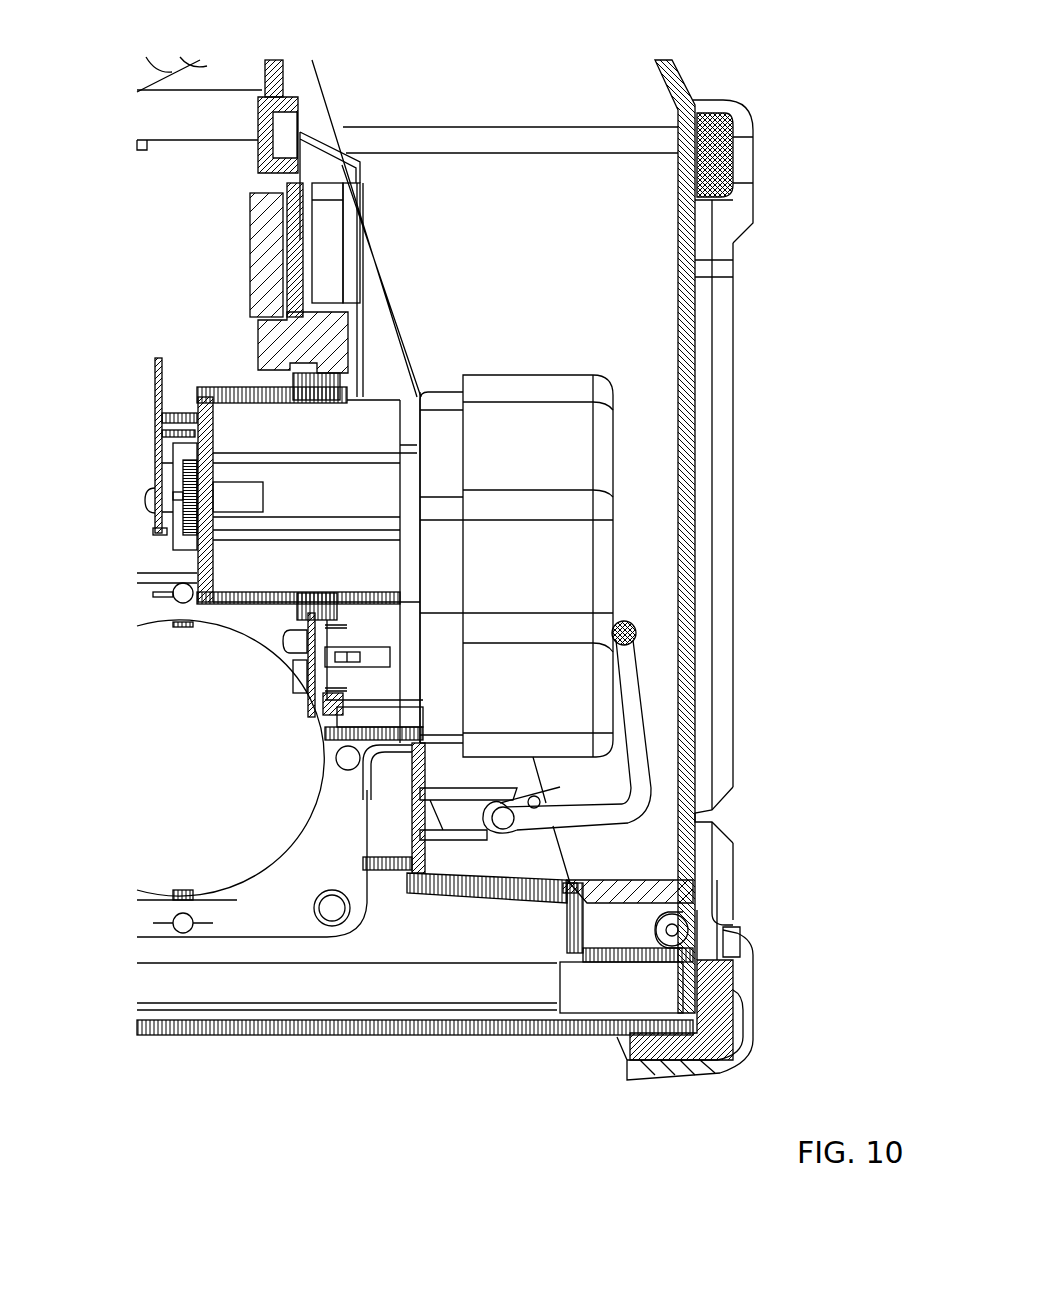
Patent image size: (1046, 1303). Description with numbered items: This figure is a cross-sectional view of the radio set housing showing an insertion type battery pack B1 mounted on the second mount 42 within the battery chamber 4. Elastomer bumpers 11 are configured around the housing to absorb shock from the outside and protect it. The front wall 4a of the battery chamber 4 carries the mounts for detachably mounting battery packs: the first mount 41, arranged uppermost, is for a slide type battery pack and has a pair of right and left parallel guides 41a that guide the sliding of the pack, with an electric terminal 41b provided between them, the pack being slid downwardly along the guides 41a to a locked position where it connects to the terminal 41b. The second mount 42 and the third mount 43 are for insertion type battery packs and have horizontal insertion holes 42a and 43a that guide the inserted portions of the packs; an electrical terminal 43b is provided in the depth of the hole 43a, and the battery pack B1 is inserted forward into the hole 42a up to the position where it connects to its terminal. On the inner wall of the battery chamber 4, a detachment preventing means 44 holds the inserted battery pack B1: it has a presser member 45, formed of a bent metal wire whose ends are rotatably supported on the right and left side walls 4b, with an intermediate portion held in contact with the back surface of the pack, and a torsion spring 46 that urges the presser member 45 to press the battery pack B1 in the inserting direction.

The first mount 41 is at (352, 210).
The guides 41a is at (333, 137).
The electric terminal 41b is at (330, 273).
The elastomer bumpers 11 is at (735, 130).
The battery chamber 4 is at (487, 588).
The front wall 4a is at (687, 327).
The side walls 4b is at (371, 1035).
The insertion type battery pack B1 is at (572, 447).
The presser member 45 is at (625, 618).
The detachment preventing means 44 is at (646, 709).
The second mount 42 is at (262, 546).
The insertion hole 42a is at (245, 415).
The third mount 43 is at (250, 704).
The insertion hole 43a is at (333, 677).
The electrical terminal 43b is at (323, 707).
The torsion spring 46 is at (502, 838).